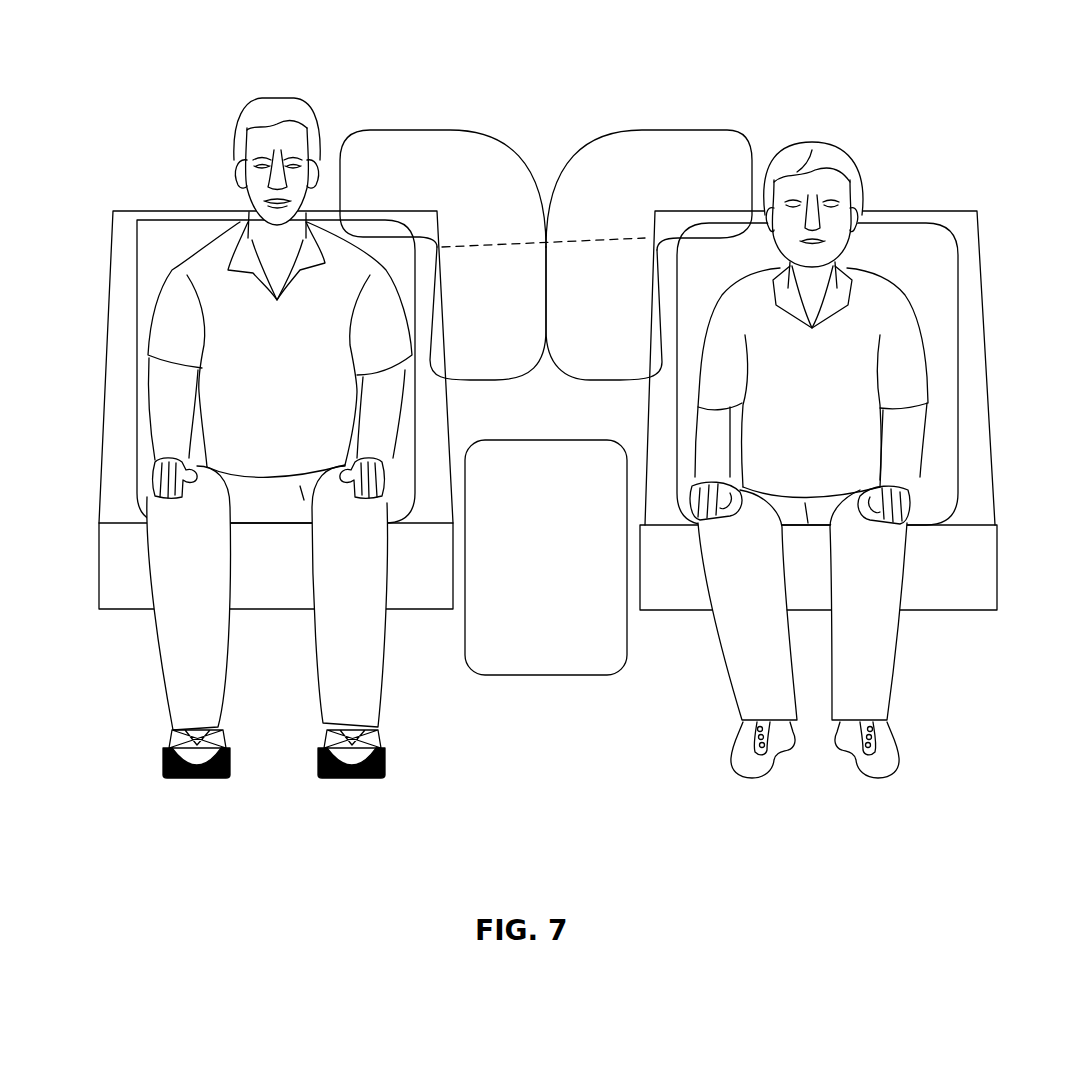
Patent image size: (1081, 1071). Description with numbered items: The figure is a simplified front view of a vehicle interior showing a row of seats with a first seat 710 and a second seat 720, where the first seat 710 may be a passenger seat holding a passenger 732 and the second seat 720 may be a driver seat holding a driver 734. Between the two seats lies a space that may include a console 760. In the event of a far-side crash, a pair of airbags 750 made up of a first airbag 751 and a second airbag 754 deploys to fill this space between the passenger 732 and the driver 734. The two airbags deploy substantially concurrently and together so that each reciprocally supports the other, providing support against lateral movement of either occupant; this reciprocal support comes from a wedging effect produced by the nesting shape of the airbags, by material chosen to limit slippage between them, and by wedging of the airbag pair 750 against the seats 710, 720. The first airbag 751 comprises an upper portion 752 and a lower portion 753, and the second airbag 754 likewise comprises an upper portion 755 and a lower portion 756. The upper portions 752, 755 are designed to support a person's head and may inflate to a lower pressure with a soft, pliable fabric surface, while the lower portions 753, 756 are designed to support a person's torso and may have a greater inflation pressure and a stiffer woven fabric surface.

The first seat 710 is at (193, 209).
The second seat 720 is at (988, 330).
The passenger 732 is at (268, 98).
The driver 734 is at (808, 145).
The pair of airbags 750 is at (544, 357).
The first airbag 751 is at (441, 216).
The upper portion 752 is at (418, 190).
The lower portion 753 is at (443, 285).
The second airbag 754 is at (649, 222).
The upper portion 755 is at (603, 190).
The lower portion 756 is at (555, 343).
The console 760 is at (532, 437).